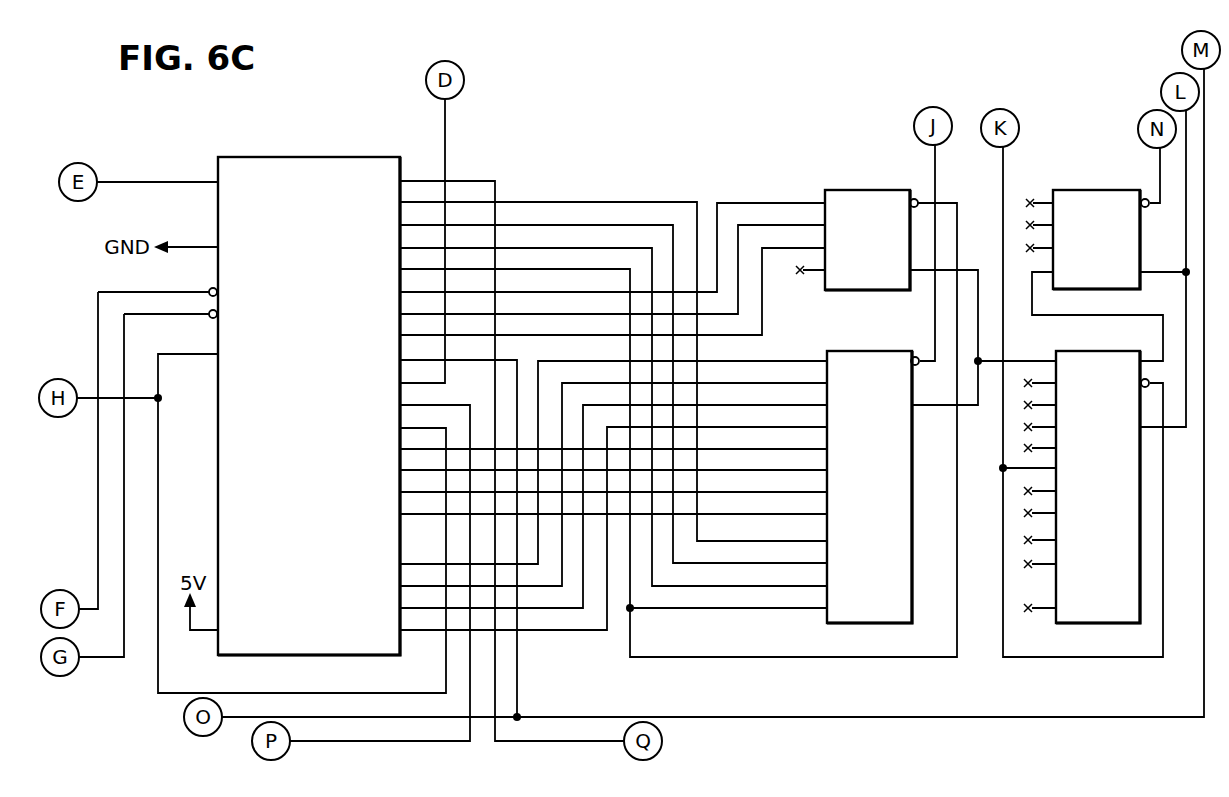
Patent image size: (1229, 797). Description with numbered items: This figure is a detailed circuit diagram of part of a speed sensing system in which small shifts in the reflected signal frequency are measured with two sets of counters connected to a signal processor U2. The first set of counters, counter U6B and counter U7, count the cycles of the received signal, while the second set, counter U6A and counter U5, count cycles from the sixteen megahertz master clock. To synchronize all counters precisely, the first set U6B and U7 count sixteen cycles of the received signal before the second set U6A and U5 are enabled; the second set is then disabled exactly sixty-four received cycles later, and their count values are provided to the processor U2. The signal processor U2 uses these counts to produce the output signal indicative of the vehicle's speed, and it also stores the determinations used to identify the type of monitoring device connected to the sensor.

The signal processor U2 is at (309, 392).
The counter U6A is at (867, 228).
The counter U5 is at (869, 474).
The counter U6B is at (1096, 227).
The counter U7 is at (1098, 474).